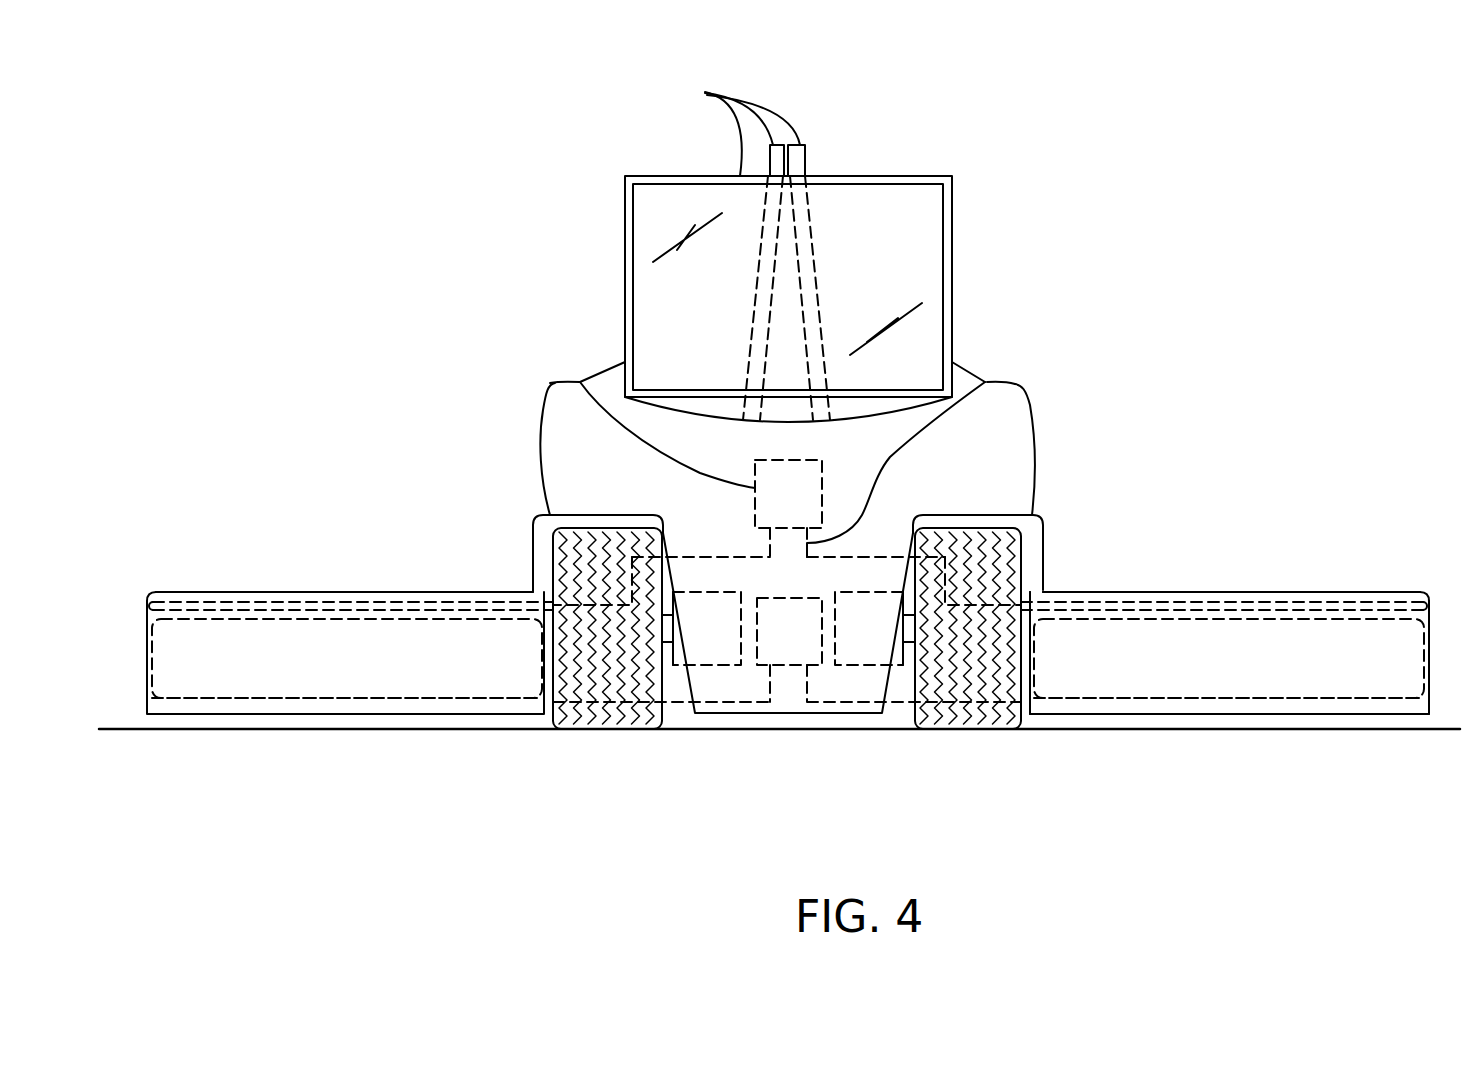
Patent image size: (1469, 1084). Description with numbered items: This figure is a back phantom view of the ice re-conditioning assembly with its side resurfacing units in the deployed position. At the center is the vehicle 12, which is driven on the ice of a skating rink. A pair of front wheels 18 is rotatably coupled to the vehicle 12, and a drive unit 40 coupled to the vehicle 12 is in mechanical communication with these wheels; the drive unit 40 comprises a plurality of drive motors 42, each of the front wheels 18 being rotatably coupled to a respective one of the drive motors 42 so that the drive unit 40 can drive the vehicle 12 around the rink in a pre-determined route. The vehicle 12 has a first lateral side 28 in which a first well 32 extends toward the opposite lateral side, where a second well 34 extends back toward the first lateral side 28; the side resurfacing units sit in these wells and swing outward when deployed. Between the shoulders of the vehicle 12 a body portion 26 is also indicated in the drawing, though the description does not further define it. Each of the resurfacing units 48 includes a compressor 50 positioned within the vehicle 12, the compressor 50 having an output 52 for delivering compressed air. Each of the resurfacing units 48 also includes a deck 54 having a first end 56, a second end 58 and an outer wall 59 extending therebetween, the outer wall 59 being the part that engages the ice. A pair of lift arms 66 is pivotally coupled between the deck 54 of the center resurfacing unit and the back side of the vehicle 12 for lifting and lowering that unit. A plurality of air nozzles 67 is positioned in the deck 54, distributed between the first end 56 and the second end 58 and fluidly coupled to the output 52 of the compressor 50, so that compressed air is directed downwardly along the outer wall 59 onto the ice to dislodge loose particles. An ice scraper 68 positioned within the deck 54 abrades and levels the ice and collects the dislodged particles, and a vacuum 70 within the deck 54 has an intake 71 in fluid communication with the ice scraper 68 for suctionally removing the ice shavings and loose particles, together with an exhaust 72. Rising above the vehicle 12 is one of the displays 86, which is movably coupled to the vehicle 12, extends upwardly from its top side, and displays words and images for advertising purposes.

The vehicle 12 is at (565, 380).
The front wheels 18 is at (580, 530).
The left shoulder portion 26 is at (540, 418).
The first lateral side 28 is at (1033, 423).
The first well 32 is at (980, 572).
The second well 34 is at (600, 572).
The drive unit 40 is at (978, 382).
The drive motors 42 is at (710, 667).
The resurfacing units 48 is at (297, 513).
The compressor 50 is at (597, 393).
The output 52 is at (790, 598).
The deck 54 is at (147, 607).
The first end 56 is at (1030, 665).
The second end 58 is at (1425, 662).
The outer wall 59 is at (1223, 592).
The lift arms 66 is at (353, 548).
The air nozzles 67 is at (225, 602).
The ice scraper 68 is at (432, 697).
The vacuum 70 is at (772, 665).
The intake 71 is at (810, 665).
The exhaust 72 is at (864, 523).
The displays 86 is at (708, 91).